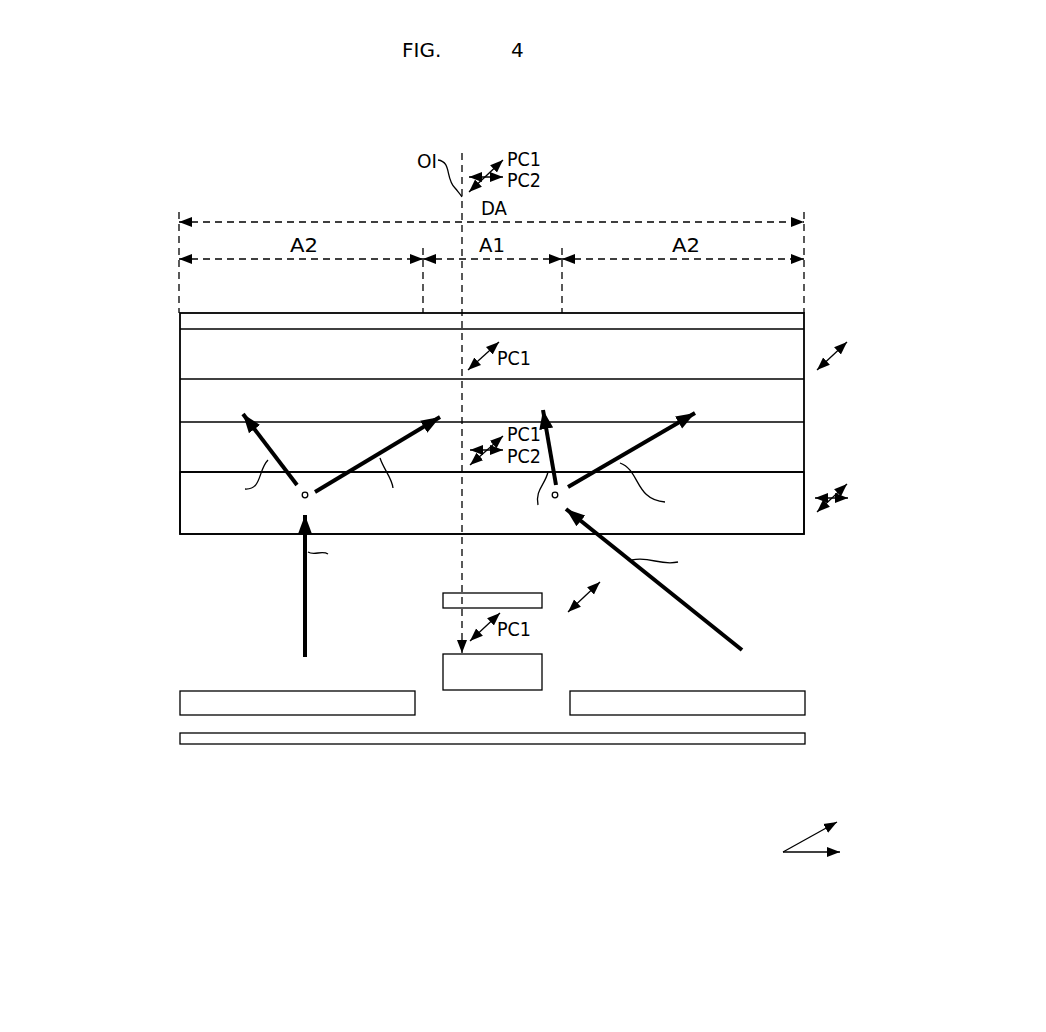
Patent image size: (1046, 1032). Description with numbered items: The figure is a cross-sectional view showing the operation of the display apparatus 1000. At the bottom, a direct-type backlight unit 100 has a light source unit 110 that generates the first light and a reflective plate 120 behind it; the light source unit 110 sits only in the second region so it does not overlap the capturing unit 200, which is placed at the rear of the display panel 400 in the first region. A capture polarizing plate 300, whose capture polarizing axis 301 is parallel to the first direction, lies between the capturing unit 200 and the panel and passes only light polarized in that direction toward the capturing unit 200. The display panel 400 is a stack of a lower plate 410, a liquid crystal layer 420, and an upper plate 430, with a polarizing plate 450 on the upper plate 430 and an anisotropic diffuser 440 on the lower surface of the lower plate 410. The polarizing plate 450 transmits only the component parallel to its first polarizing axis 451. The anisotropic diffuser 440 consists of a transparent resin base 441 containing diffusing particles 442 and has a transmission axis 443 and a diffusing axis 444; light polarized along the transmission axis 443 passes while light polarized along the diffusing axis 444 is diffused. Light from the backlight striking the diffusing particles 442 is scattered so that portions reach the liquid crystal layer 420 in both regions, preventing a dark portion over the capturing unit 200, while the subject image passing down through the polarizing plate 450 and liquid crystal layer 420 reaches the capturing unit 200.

The display apparatus 1000 is at (741, 165).
The backlight unit 100 is at (95, 692).
The light source unit 110 is at (180, 702).
The reflective plate 120 is at (180, 740).
The capturing unit 200 is at (492, 677).
The capture polarizing plate 300 is at (452, 600).
The capture polarizing axis 301 is at (596, 597).
The display panel 400 is at (78, 313).
The lower plate 410 is at (180, 450).
The liquid crystal layer 420 is at (180, 394).
The upper plate 430 is at (180, 358).
The anisotropic diffuser 440 is at (136, 500).
The base 441 is at (180, 507).
The diffusing particles 442 is at (302, 496).
The transmission axis 443 is at (851, 492).
The diffusing axis 444 is at (850, 508).
The polarizing plate 450 is at (180, 322).
The first polarizing axis 451 is at (851, 357).